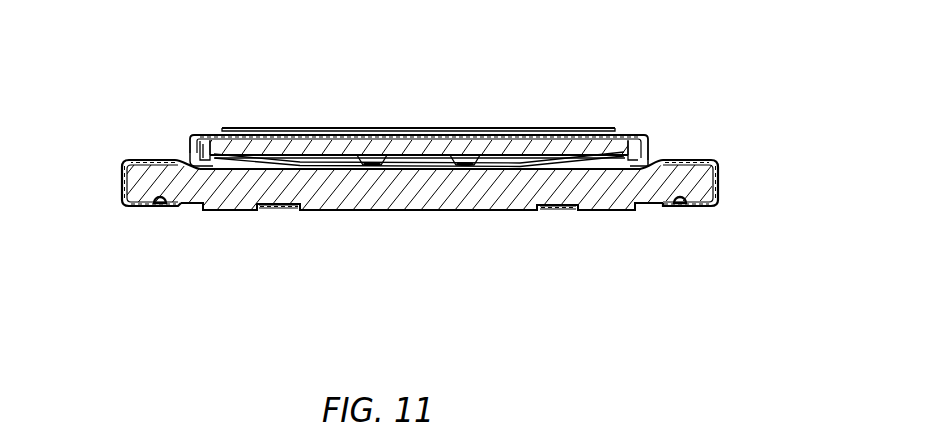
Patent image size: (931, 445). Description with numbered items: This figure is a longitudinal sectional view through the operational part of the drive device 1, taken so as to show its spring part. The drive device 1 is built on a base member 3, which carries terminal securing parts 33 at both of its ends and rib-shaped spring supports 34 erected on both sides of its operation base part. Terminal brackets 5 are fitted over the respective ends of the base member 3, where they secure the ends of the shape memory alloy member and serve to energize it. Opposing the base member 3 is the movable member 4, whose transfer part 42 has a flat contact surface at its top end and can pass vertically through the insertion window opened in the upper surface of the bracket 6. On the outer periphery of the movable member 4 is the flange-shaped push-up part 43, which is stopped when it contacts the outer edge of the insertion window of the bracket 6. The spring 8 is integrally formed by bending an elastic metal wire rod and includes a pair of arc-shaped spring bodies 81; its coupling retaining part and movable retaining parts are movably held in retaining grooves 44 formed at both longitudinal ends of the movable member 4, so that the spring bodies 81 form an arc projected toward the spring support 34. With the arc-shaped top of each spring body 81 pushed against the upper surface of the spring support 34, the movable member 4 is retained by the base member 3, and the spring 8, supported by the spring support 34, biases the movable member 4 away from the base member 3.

The drive device 1 is at (434, 98).
The base member 3 is at (422, 190).
The terminal securing part 33 is at (140, 206).
The spring support 34 is at (460, 177).
The movable member 4 is at (426, 129).
The transfer part 42 is at (510, 133).
The push-up part 43 is at (207, 151).
The retaining groove 44 is at (187, 136).
The terminal bracket 5 is at (133, 158).
The bracket 6 is at (641, 131).
The spring 8 is at (523, 165).
The spring body 81 is at (380, 165).